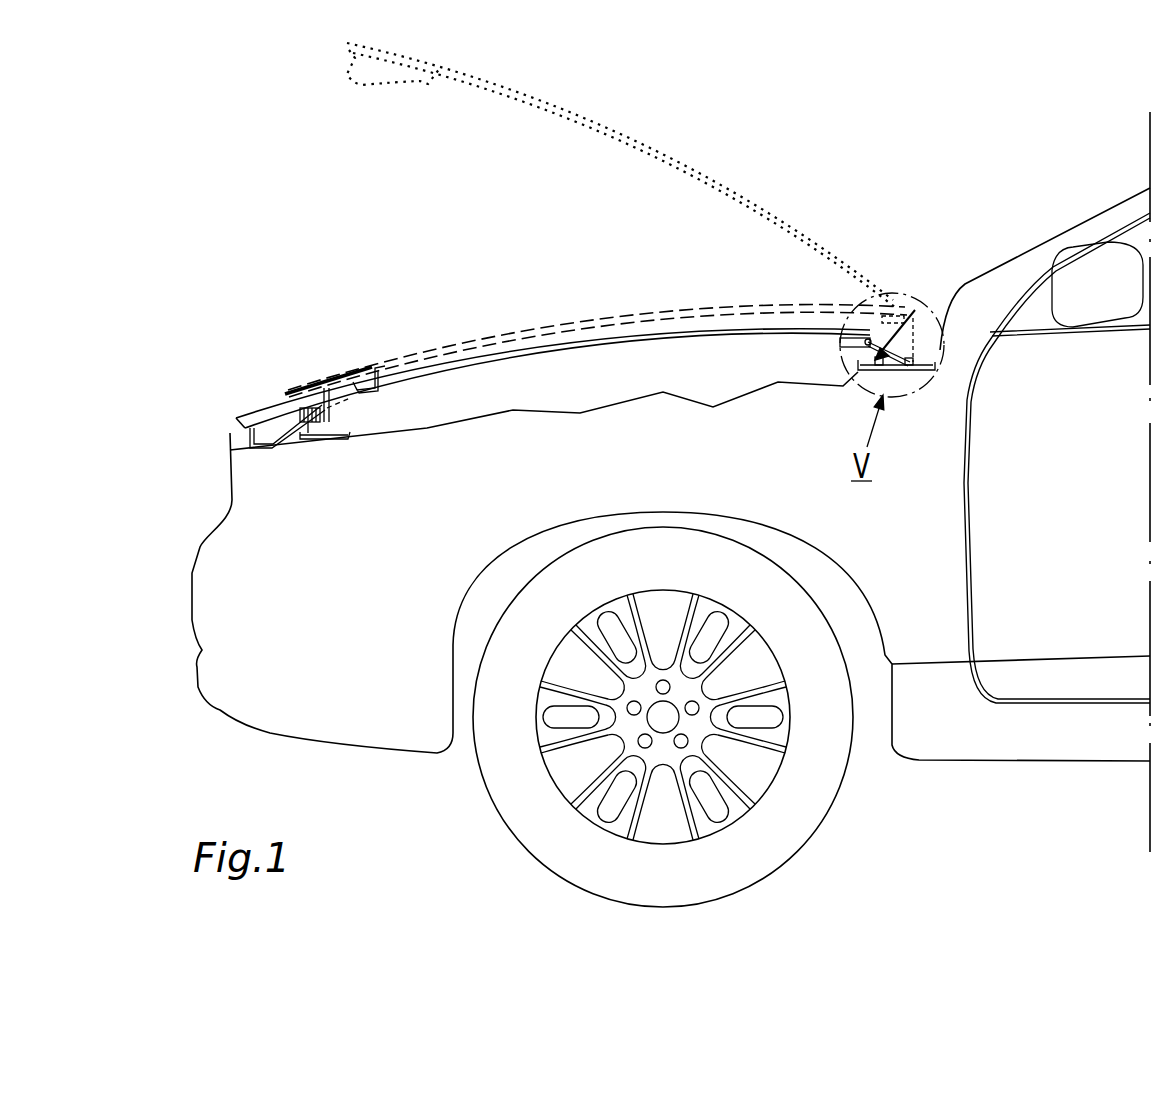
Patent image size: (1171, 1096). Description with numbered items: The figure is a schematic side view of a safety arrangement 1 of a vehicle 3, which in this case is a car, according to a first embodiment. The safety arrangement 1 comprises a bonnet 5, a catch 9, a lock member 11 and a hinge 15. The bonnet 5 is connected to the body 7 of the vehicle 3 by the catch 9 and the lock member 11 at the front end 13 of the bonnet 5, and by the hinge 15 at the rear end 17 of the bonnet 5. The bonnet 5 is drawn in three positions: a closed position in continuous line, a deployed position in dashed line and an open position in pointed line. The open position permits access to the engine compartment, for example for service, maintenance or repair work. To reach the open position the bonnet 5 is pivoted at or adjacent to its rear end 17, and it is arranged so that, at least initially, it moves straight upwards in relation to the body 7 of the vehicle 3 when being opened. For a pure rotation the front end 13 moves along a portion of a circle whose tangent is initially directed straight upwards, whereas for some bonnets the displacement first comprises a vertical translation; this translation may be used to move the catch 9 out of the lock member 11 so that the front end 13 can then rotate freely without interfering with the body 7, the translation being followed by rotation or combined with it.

The safety arrangement 1 is at (383, 292).
The vehicle 3 is at (1015, 204).
The bonnet 5 is at (622, 138).
The body 7 is at (310, 443).
The catch 9 is at (245, 448).
The lock member 11 is at (325, 424).
The front end 13 is at (246, 398).
The hinge 15 is at (855, 358).
The rear end 17 is at (838, 300).